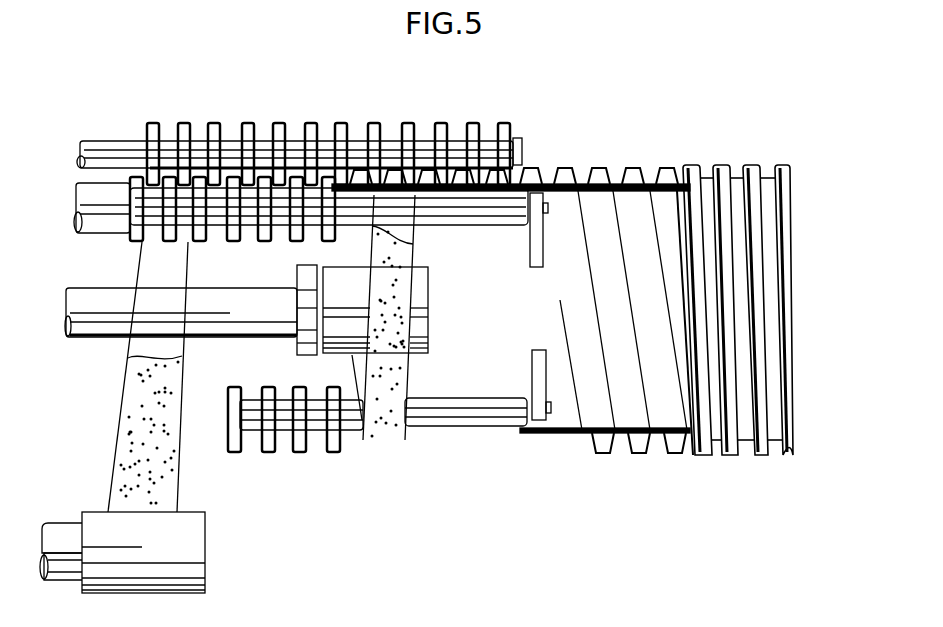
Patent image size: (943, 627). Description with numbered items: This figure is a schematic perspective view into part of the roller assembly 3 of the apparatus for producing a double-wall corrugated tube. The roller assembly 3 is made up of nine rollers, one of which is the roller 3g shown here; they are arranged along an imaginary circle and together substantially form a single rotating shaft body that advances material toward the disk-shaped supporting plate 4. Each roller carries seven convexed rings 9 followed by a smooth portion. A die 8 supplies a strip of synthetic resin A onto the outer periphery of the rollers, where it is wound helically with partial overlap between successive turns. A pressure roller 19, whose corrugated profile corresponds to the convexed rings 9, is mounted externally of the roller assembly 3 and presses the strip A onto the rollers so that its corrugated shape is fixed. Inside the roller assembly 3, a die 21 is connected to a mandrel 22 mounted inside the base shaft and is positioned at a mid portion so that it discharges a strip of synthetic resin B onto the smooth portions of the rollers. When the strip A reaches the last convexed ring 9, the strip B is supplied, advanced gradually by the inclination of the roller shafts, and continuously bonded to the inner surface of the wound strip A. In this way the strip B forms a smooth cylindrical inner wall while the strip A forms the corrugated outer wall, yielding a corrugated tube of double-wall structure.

The pressure roller 19 is at (108, 140).
The convexed rings 9 is at (262, 243).
The roller 3g is at (486, 452).
The supporting plate 4 is at (530, 244).
The mandrel 22 is at (70, 340).
The die 21 is at (428, 305).
The strip of synthetic resin B is at (380, 440).
The strip of synthetic resin A is at (120, 440).
The die 8 is at (200, 548).
The roller assembly 3 is at (316, 449).